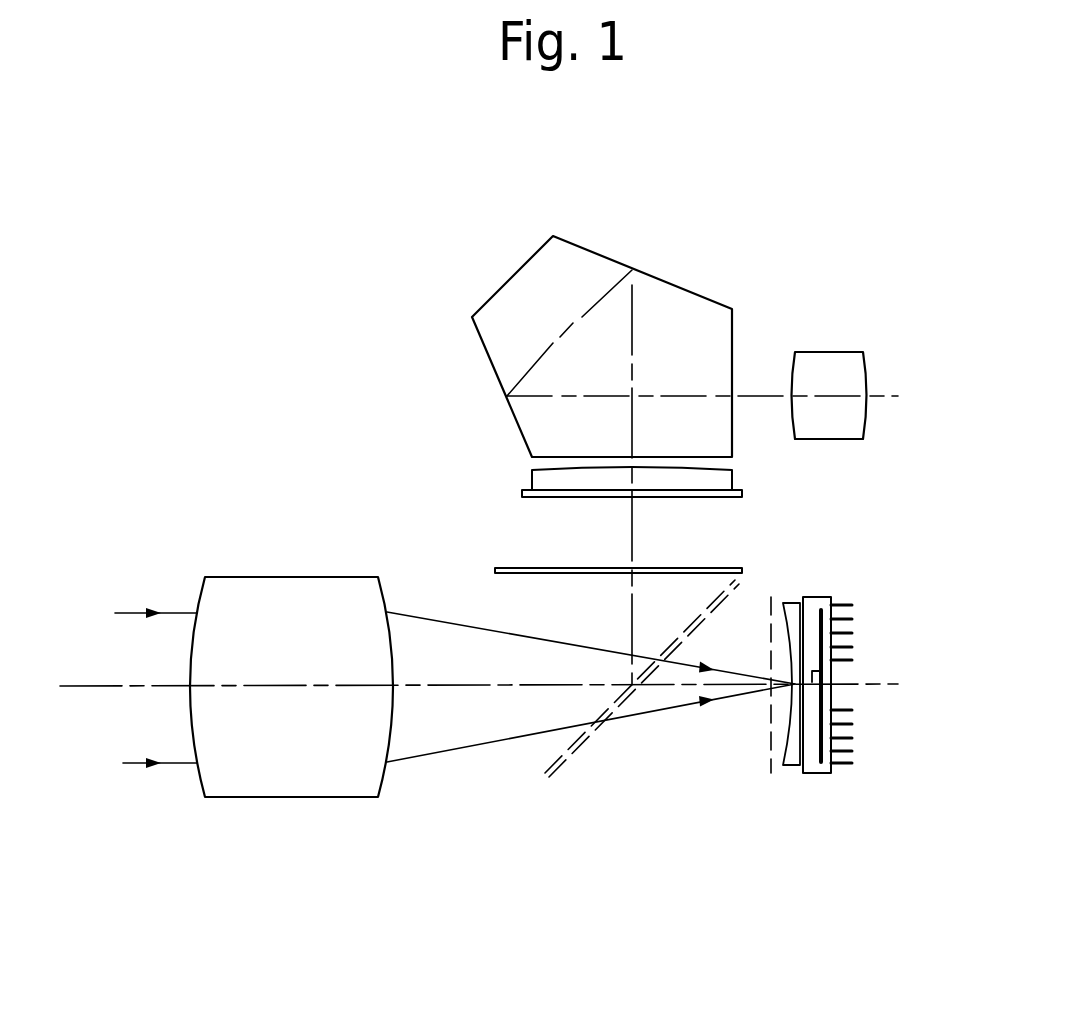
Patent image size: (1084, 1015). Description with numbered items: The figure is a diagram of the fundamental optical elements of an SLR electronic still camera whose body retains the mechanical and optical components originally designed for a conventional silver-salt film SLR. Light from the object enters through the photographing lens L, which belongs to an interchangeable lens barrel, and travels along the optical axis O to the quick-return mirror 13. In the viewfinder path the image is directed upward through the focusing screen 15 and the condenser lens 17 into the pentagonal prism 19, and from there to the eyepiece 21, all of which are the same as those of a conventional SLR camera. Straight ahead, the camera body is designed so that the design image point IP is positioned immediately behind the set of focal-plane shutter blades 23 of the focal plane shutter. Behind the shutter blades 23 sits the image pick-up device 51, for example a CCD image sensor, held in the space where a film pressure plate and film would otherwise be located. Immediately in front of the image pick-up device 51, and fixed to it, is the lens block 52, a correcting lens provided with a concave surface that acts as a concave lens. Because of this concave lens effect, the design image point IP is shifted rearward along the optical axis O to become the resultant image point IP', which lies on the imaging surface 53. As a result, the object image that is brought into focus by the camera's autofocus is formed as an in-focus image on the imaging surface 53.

The photographing lens L is at (275, 593).
The quick-return mirror 13 is at (525, 567).
The focusing screen 15 is at (560, 497).
The condenser lens 17 is at (537, 482).
The pentagonal prism 19 is at (687, 330).
The eyepiece 21 is at (825, 385).
The focal-plane shutter blades 23 is at (768, 717).
The image pick-up device 51 is at (822, 773).
The lens block 52 is at (790, 602).
The imaging surface 53 is at (820, 612).
The image point IP is at (782, 772).
The resultant image point IP' is at (874, 651).
The optical axis O is at (923, 685).